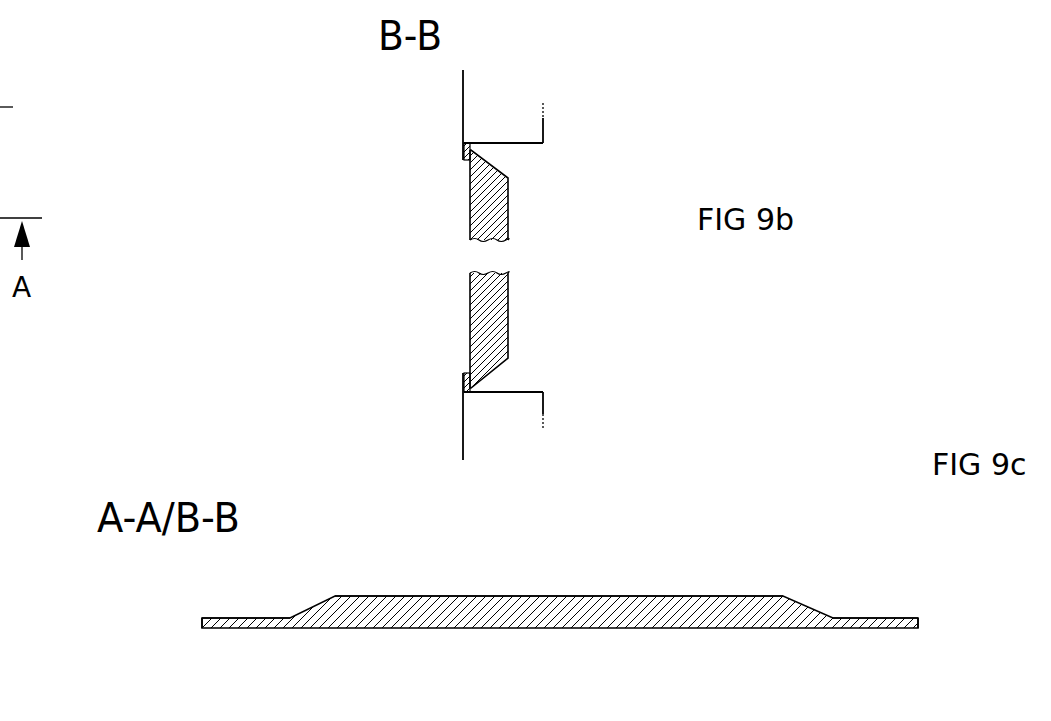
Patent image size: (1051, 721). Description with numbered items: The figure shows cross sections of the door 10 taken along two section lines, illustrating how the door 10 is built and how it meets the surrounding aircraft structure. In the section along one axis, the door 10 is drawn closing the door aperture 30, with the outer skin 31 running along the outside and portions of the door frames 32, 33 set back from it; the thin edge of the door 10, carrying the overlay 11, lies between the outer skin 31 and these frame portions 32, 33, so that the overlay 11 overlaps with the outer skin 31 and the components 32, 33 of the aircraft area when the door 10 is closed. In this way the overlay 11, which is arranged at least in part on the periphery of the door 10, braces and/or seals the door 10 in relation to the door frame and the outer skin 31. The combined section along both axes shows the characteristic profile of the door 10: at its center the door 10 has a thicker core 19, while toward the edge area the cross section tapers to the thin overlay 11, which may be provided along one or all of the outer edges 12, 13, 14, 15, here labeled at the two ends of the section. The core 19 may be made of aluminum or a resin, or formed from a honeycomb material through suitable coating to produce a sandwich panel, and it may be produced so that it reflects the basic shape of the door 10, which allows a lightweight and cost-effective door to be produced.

In FIG. 9B, the door 10 is at (510, 212).
In FIG. 9C, the door 10 is at (808, 584).
In FIG. 9B, the overlay 11 is at (478, 149).
In FIG. 9C, the overlay 11 is at (207, 617).
In FIG. 9B, the outer edge 12 is at (468, 143).
In FIG. 9C, the outer edge 12 is at (920, 623).
In FIG. 9B, the outer edge 13 is at (468, 394).
In FIG. 9C, the outer edge 13 is at (200, 624).
In FIG. 9C, the outer edge 14 is at (149, 612).
In FIG. 9B, the outer edge 15 is at (20, 108).
In FIG. 9C, the outer edge 15 is at (971, 613).
In FIG. 9C, the core 19 is at (668, 595).
In FIG. 9B, the door aperture 30 is at (473, 268).
In FIG. 9B, the outer skin 31 is at (463, 112).
In FIG. 9B, the door frame 32 is at (545, 403).
In FIG. 9B, the door frame 33 is at (545, 136).